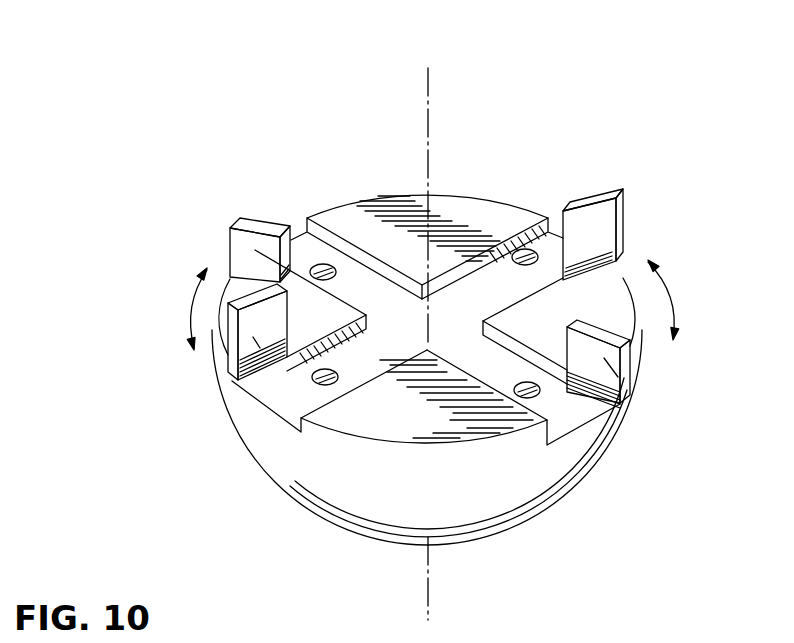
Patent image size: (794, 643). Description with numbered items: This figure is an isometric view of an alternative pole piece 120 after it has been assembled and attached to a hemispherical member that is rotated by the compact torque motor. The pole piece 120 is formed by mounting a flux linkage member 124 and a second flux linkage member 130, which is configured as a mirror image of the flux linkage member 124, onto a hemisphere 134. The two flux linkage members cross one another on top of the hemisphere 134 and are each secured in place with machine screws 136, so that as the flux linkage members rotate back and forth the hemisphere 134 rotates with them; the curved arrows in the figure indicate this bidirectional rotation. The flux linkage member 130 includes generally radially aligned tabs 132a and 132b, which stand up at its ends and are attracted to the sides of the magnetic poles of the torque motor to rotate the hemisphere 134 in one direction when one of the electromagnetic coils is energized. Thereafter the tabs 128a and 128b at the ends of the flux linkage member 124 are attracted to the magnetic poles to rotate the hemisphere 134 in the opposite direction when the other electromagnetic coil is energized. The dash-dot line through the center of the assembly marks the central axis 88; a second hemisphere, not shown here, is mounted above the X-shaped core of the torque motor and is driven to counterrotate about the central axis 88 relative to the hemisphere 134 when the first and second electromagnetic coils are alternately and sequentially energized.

The central axis 88 is at (428, 103).
The pole piece 120 is at (291, 442).
The flux linkage member 124 is at (377, 293).
The flux linkage member 130 is at (465, 292).
The tab 128a is at (240, 253).
The tab 128b is at (632, 375).
The tab 132a is at (607, 220).
The tab 132b is at (250, 373).
The hemisphere 134 is at (340, 500).
The machine screws 136 is at (323, 262).